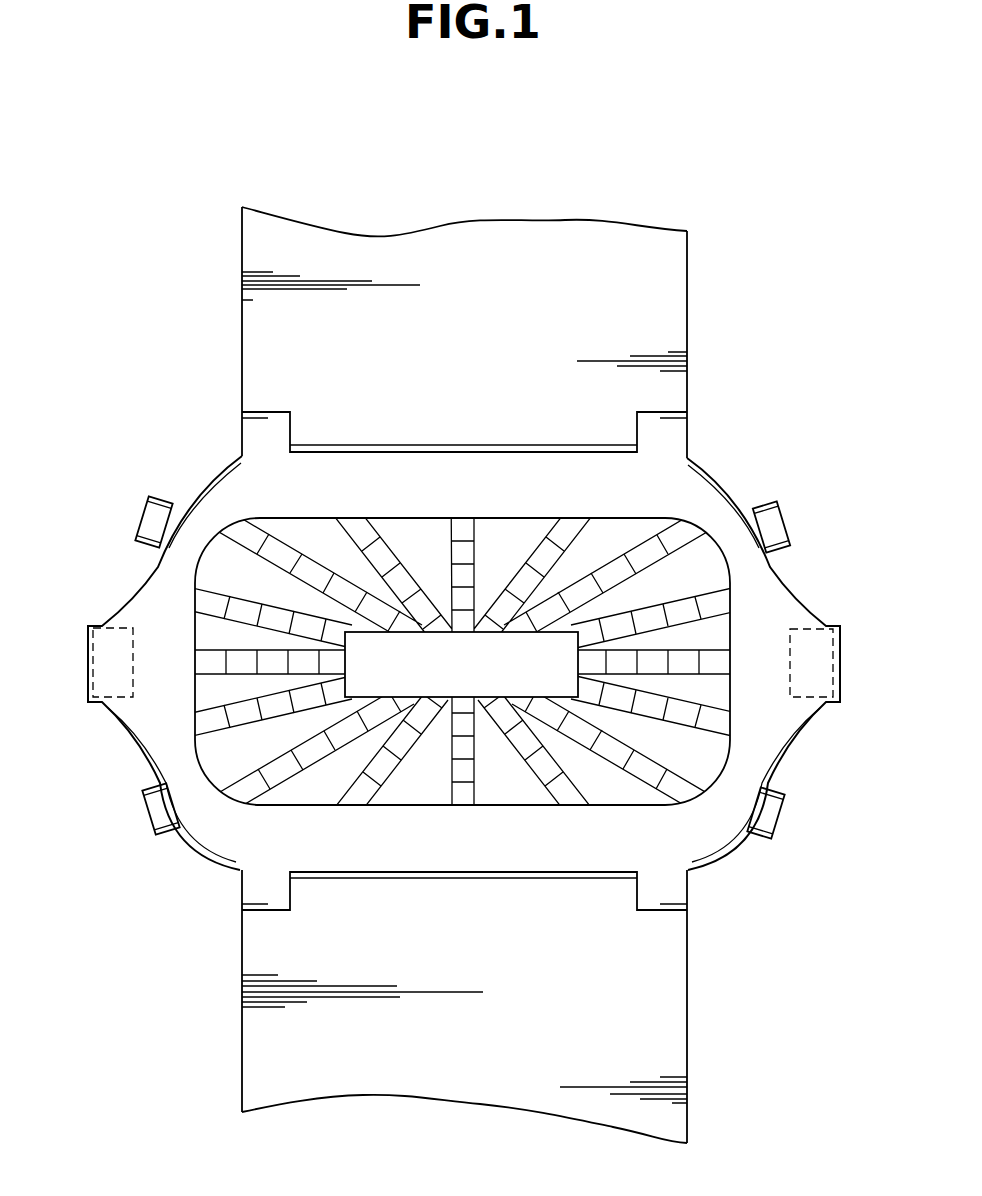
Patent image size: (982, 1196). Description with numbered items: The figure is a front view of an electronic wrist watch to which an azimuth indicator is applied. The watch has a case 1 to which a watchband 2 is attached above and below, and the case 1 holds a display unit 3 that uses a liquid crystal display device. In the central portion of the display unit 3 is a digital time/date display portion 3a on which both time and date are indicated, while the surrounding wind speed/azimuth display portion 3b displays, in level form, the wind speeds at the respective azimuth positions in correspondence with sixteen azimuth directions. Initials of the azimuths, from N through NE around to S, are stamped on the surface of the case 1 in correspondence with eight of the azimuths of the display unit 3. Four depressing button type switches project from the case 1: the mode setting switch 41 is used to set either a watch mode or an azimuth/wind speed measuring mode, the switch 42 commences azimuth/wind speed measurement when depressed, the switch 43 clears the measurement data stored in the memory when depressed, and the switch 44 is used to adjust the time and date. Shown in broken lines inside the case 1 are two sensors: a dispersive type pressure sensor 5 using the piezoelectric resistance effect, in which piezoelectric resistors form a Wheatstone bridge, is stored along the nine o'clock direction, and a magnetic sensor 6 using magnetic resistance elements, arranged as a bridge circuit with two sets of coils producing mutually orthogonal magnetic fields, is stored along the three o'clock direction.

The case 1 is at (729, 477).
The watchband 2 is at (687, 317).
The display unit 3 is at (508, 664).
The digital time/date display portion 3a is at (450, 633).
The wind speed/azimuth display portion 3b is at (695, 578).
The mode setting switch 41 is at (776, 820).
The measurement commencing switch 42 is at (152, 814).
The measurement data clearing switch 43 is at (142, 521).
The time/date adjusting switch 44 is at (786, 522).
The pressure sensor 5 is at (108, 660).
The magnetic sensor 6 is at (826, 680).